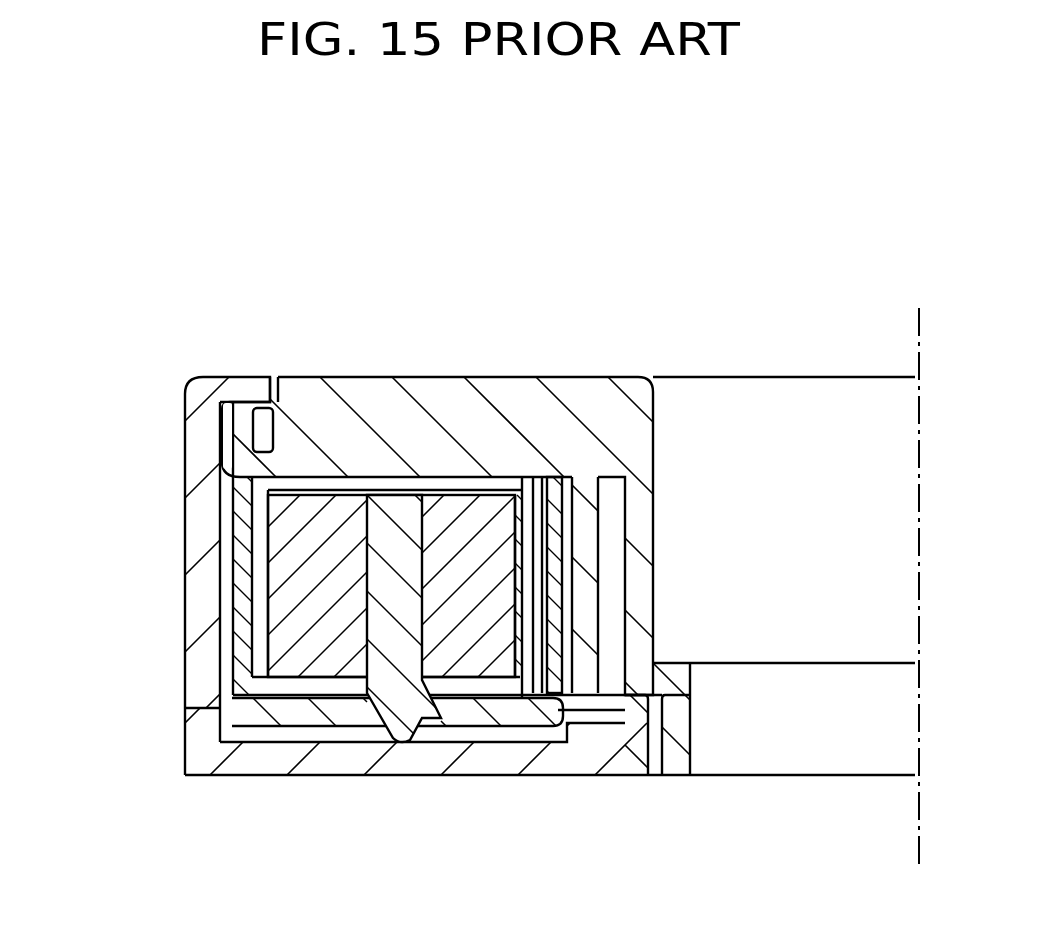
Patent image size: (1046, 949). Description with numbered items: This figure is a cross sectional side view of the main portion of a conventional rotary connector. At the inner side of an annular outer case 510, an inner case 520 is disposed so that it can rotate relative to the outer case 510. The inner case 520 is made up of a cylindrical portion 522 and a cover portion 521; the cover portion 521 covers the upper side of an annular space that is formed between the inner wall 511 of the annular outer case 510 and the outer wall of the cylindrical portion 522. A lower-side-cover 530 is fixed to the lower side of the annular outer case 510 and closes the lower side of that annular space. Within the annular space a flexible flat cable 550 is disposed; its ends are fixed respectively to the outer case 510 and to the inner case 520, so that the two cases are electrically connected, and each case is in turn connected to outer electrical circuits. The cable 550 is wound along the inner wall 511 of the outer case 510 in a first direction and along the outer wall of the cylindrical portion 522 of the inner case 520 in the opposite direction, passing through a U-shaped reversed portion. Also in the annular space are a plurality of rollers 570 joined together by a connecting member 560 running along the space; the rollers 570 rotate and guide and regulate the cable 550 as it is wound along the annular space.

The annular outer case 510 is at (185, 475).
The inner wall 511 is at (220, 587).
The inner case 520 is at (663, 240).
The cover portion 521 is at (447, 412).
The cylindrical portion 522 is at (585, 545).
The lower-side-cover 530 is at (207, 760).
The flexible flat cable 550 is at (237, 667).
The connecting member 560 is at (347, 722).
The rollers 570 is at (478, 668).